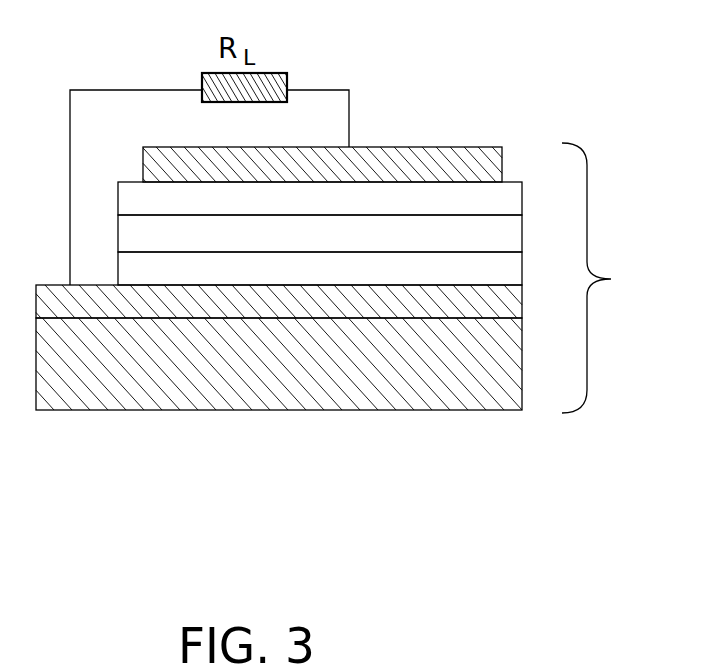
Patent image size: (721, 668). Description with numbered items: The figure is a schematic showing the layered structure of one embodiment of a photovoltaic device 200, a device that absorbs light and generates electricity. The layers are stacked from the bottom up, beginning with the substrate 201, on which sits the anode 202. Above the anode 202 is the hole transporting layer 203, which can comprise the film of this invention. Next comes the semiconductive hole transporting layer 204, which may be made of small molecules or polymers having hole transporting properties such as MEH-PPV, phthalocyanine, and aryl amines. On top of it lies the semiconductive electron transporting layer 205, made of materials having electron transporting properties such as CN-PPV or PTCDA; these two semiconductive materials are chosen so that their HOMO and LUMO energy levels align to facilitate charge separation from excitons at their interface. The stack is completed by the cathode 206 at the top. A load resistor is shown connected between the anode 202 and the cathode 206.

The solar cell / photovoltaic element 200 is at (614, 278).
The substrate 201 is at (279, 364).
The anode 202 is at (279, 301).
The hole transporting layer 203 is at (320, 268).
The semiconductive hole transporting layer 204 is at (320, 233).
The semiconductive electron transporting layer 205 is at (320, 198).
The cathode 206 is at (322, 164).